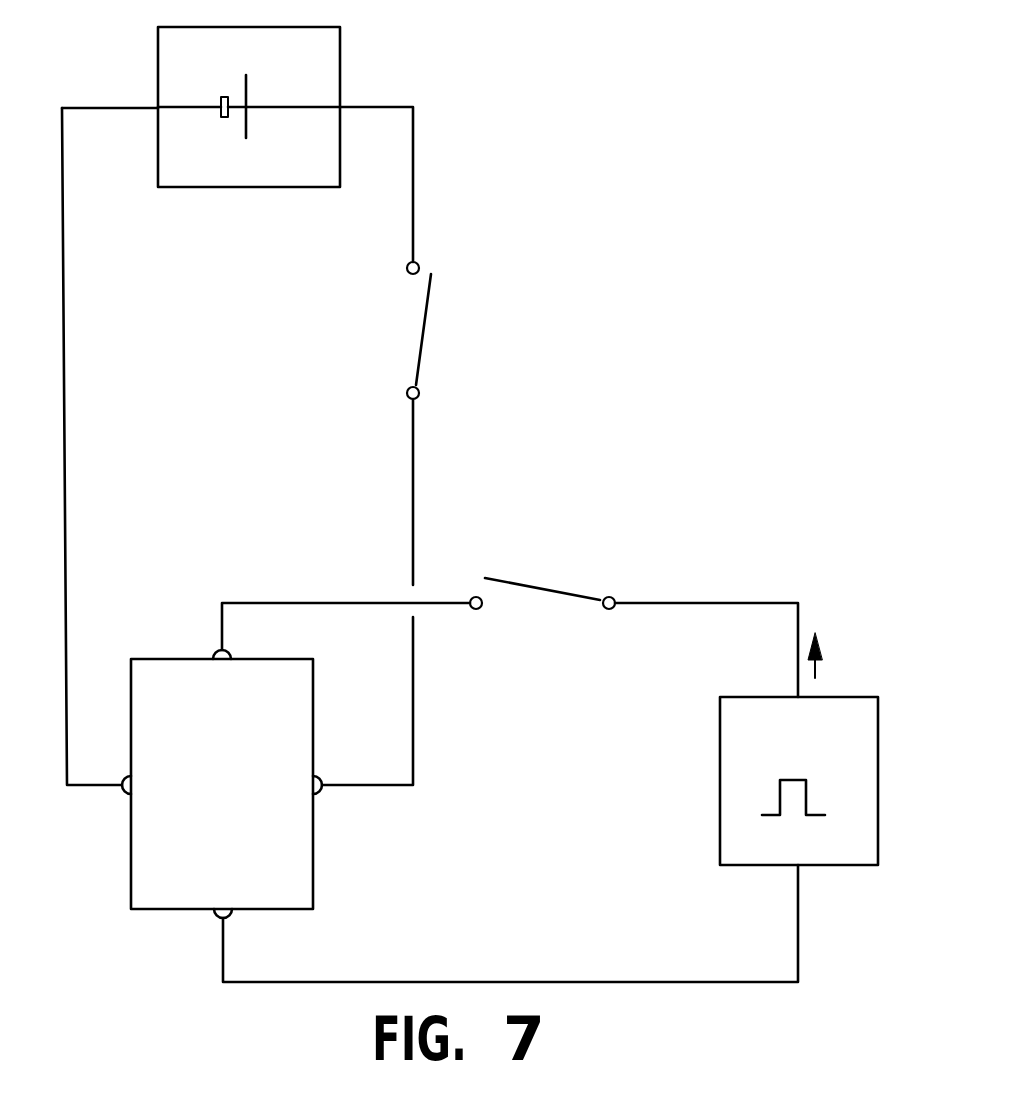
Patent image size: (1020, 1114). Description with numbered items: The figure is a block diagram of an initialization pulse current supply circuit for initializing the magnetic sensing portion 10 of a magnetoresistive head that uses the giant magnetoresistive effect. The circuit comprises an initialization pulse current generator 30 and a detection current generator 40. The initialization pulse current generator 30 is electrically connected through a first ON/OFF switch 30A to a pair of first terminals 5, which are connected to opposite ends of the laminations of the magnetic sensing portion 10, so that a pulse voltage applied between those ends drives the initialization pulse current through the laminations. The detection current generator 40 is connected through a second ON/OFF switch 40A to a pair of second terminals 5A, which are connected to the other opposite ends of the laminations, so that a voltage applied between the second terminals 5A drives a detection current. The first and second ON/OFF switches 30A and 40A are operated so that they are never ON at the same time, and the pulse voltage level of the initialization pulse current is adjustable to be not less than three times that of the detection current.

The detection current generator 40 is at (340, 60).
The second ON/OFF switch 40A is at (434, 327).
The first ON/OFF switch 30A is at (553, 580).
The initialization pulse current generator 30 is at (843, 697).
The magnetic sensing portion 10 is at (313, 877).
The first terminals 5 is at (212, 652).
The second terminals 5A is at (123, 793).